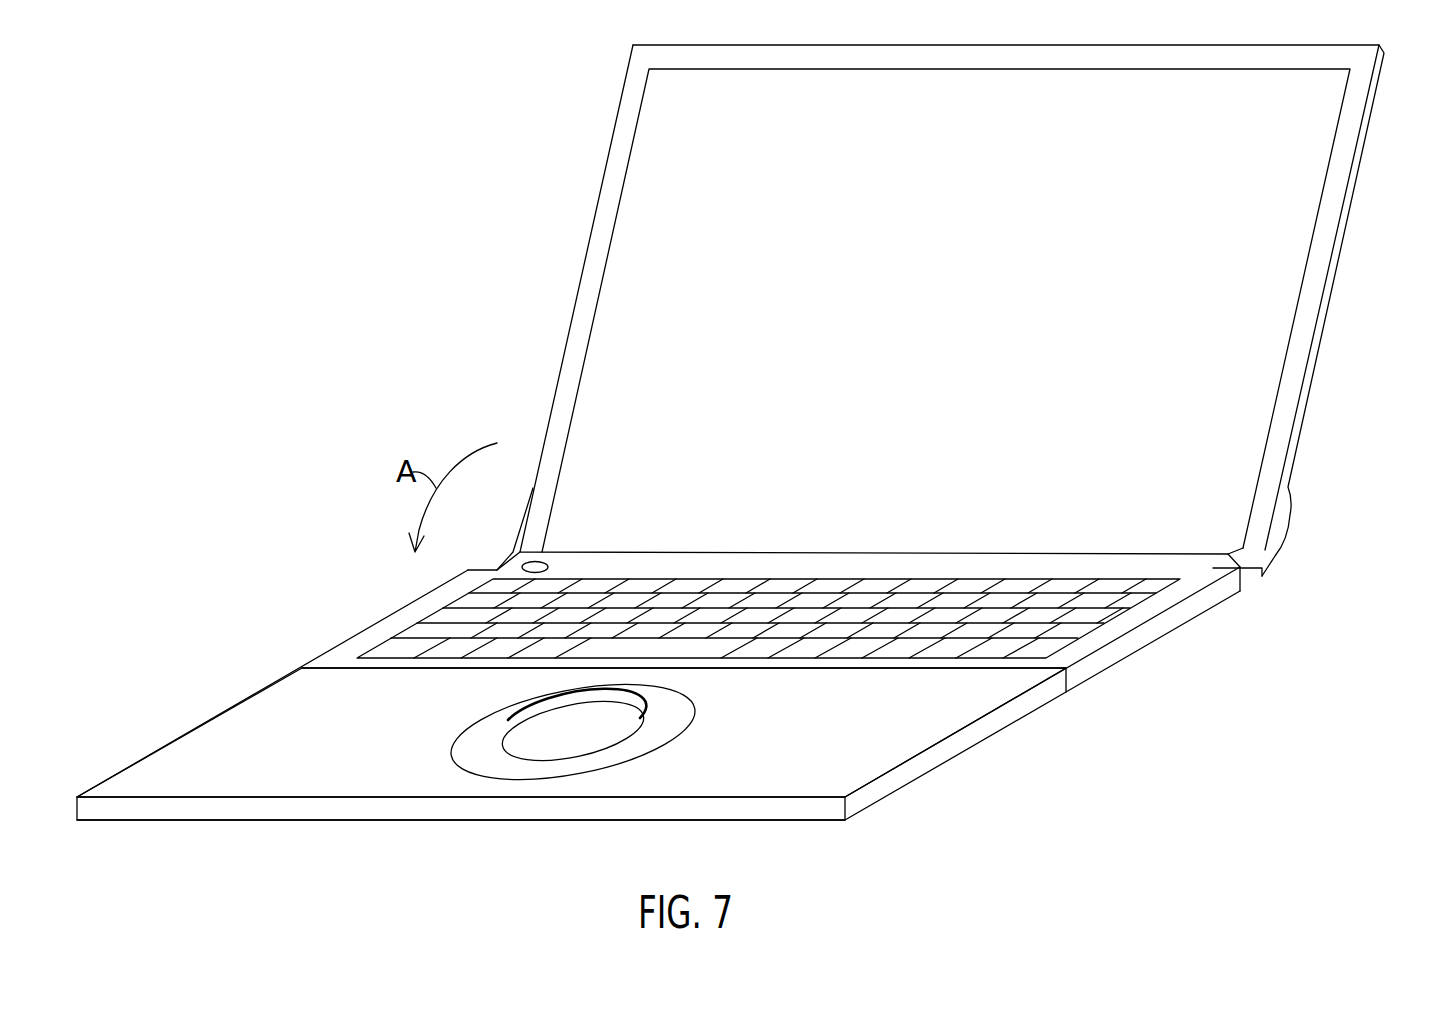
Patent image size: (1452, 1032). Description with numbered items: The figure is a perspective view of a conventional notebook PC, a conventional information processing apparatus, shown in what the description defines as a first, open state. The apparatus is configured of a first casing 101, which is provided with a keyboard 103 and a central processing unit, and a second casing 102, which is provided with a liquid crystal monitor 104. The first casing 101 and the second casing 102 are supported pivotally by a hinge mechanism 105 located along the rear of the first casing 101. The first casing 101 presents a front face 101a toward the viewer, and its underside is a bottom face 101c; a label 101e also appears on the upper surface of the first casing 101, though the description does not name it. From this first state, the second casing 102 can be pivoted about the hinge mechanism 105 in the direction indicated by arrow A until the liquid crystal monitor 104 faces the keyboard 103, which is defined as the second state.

The first casing 101 is at (658, 731).
The front face 101a is at (351, 821).
The bottom face 101c is at (517, 834).
The top surface (palm rest) of base unit 101e is at (931, 723).
The second casing 102 is at (1325, 327).
The keyboard 103 is at (1118, 605).
The liquid crystal monitor 104 is at (1278, 250).
The hinge mechanism 105 is at (1265, 562).